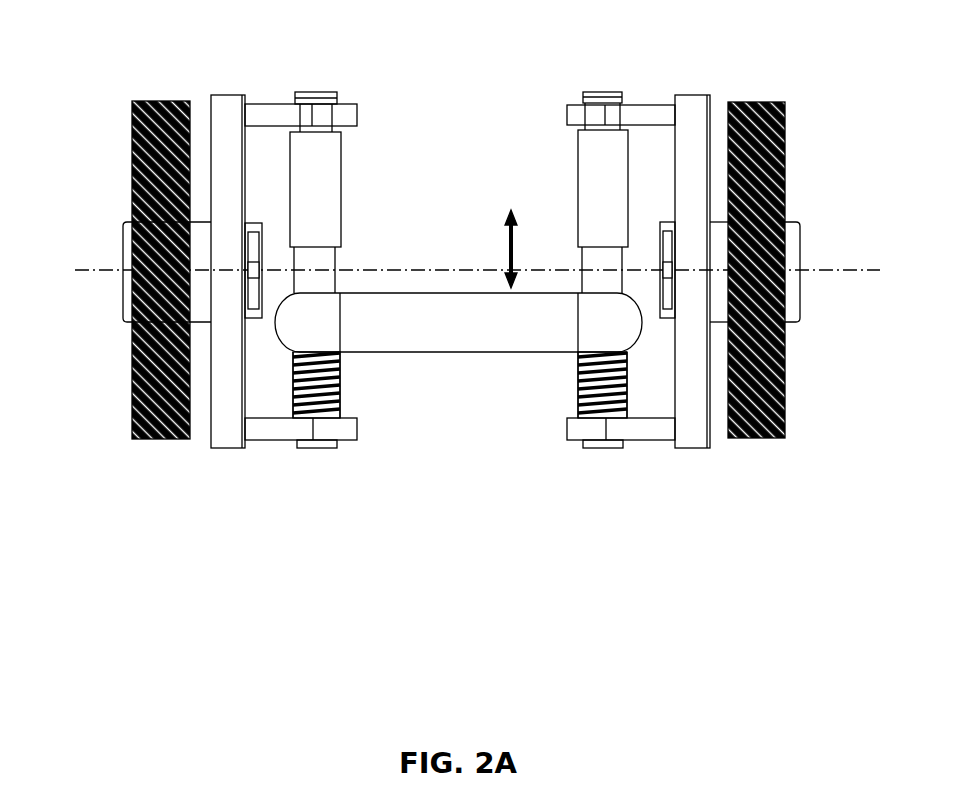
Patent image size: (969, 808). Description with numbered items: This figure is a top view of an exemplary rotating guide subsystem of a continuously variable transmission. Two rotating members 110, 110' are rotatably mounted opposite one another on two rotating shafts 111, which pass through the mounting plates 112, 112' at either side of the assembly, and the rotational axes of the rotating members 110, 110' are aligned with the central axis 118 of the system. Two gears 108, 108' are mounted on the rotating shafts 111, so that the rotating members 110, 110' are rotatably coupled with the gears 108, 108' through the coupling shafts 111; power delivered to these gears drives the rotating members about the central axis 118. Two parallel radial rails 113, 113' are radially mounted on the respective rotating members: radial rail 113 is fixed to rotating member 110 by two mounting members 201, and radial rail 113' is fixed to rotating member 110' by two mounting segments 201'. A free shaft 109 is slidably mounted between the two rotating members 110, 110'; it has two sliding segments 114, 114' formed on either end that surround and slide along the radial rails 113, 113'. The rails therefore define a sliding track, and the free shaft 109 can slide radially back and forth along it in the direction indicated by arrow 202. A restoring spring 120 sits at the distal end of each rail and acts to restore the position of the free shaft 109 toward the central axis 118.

The gear 108 is at (155, 314).
The gear 108' is at (778, 316).
The free shaft 109 is at (458, 322).
The rotating member 110 is at (296, 337).
The rotating member 110' is at (637, 341).
The rotating shaft 111 is at (125, 250).
The mounting plate 112 is at (215, 233).
The mounting plate 112' is at (677, 233).
The radial rail 113 is at (366, 198).
The radial rail 113' is at (553, 198).
The sliding segment 114 is at (344, 376).
The sliding segment 114' is at (570, 376).
The central axis 118 is at (456, 256).
The restoring spring 120 is at (336, 408).
The mounting member 201 is at (330, 286).
The mounting segment 201' is at (586, 283).
The arrow 202 is at (515, 246).